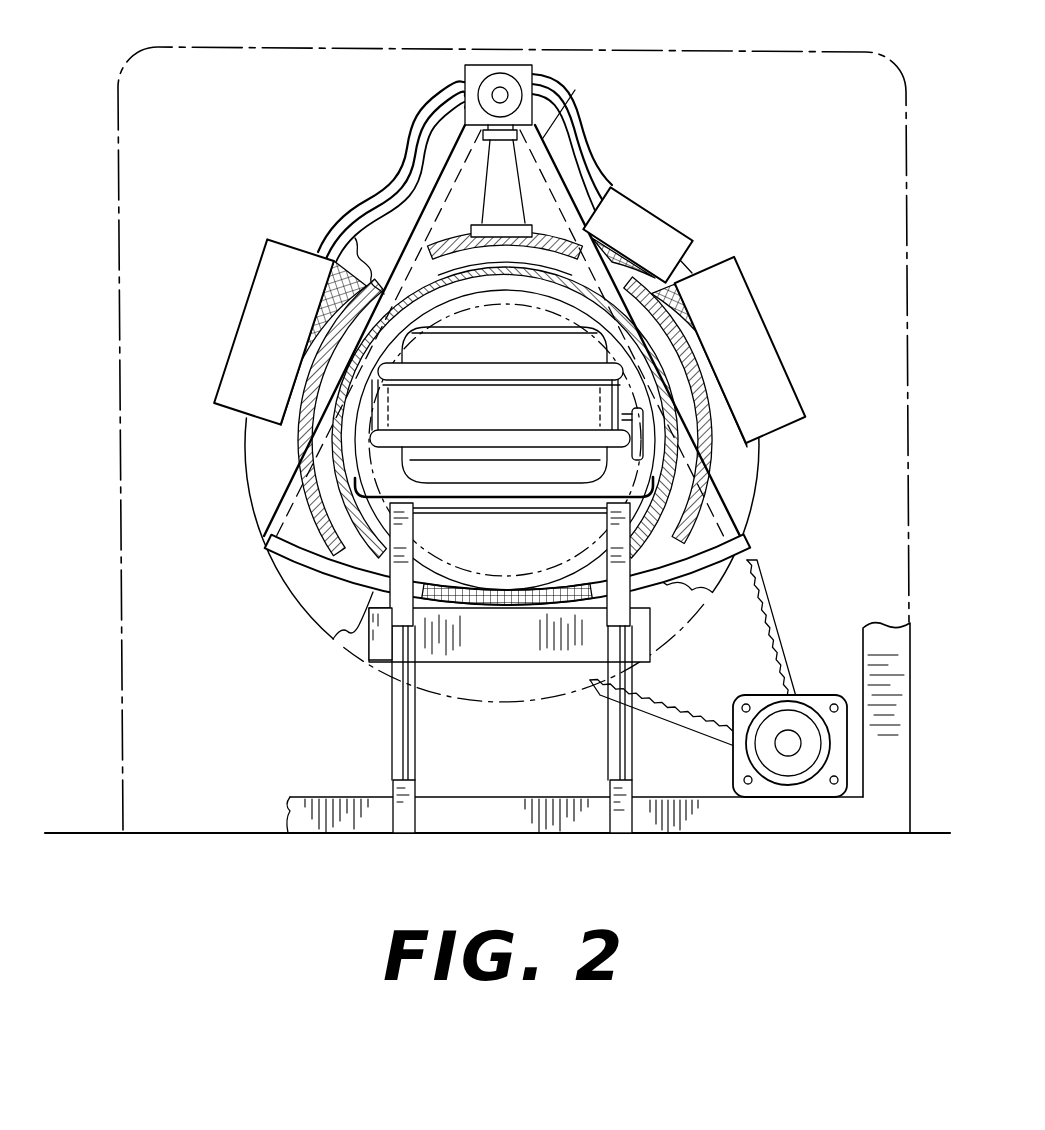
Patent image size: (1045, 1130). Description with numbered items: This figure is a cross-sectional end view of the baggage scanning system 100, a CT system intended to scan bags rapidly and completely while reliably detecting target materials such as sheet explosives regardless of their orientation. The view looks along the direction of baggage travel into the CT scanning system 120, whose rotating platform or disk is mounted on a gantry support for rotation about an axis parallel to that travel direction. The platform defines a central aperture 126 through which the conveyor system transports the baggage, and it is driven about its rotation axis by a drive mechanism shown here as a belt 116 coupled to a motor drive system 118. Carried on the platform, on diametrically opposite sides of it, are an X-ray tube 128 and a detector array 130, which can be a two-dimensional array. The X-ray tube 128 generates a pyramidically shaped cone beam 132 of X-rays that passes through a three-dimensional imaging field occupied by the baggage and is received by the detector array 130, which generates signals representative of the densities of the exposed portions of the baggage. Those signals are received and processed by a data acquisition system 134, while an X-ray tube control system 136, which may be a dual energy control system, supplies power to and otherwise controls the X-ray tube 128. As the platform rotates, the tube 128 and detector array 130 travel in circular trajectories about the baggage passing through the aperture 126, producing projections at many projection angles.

The baggage scanning system 100 is at (266, 888).
The belt 116 is at (772, 597).
The motor drive system 118 is at (790, 737).
The CT scanning system 120 is at (208, 42).
The central aperture 126 is at (522, 551).
The X-ray tube 128 is at (478, 75).
The detector array 130 is at (290, 540).
The cone beam 132 is at (745, 479).
The data acquisition system 134 is at (370, 634).
The X-ray tube control system 136 is at (263, 291).